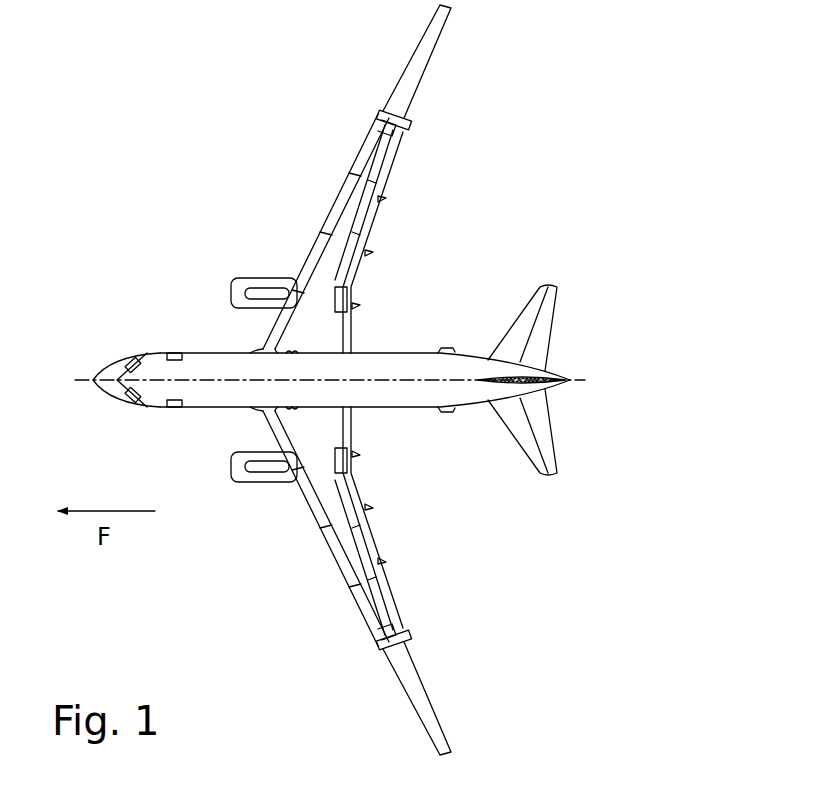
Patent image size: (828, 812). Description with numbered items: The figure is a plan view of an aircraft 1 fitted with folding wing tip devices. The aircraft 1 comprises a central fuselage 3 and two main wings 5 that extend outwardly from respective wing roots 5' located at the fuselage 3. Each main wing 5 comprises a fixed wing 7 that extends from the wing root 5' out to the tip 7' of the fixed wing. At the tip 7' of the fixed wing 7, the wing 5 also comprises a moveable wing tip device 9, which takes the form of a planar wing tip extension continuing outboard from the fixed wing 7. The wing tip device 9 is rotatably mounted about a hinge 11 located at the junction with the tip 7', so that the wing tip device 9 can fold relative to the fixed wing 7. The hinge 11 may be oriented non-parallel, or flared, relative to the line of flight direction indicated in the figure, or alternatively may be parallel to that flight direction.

The aircraft 1 is at (167, 225).
The central fuselage 3 is at (360, 373).
The main wing 5 is at (360, 380).
The wing root 5' is at (250, 382).
The fixed wing 7 is at (313, 380).
The tip of the fixed wing 7' is at (422, 380).
The moveable wing tip device 9 is at (405, 88).
The hinge 11 is at (384, 136).